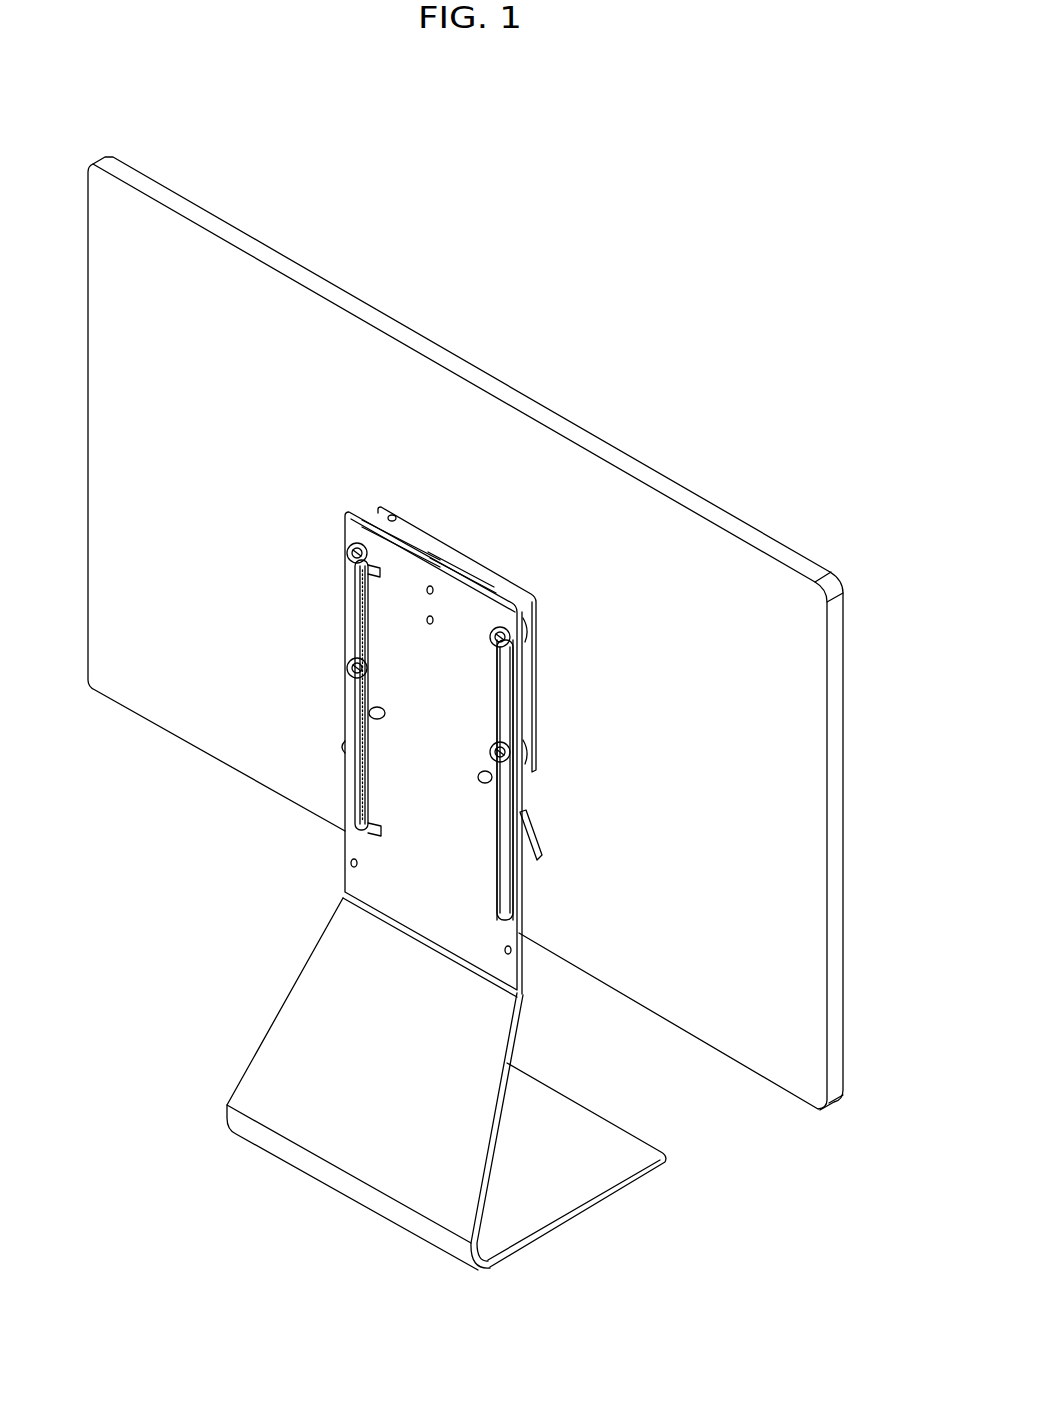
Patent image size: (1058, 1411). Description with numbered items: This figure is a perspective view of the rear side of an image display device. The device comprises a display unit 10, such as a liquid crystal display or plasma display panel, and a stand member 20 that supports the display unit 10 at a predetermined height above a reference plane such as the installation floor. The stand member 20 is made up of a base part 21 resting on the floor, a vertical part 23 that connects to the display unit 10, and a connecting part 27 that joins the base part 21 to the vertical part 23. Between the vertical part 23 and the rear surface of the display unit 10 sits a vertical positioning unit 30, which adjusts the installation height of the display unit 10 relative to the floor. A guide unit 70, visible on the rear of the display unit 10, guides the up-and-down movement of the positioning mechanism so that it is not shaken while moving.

The display unit 10 is at (203, 197).
The stand member 20 is at (396, 891).
The base part 21 is at (580, 1195).
The vertical part 23 is at (350, 872).
The connecting part 27 is at (302, 1020).
The vertical positioning unit 30 is at (553, 769).
The guide unit 70 is at (541, 640).